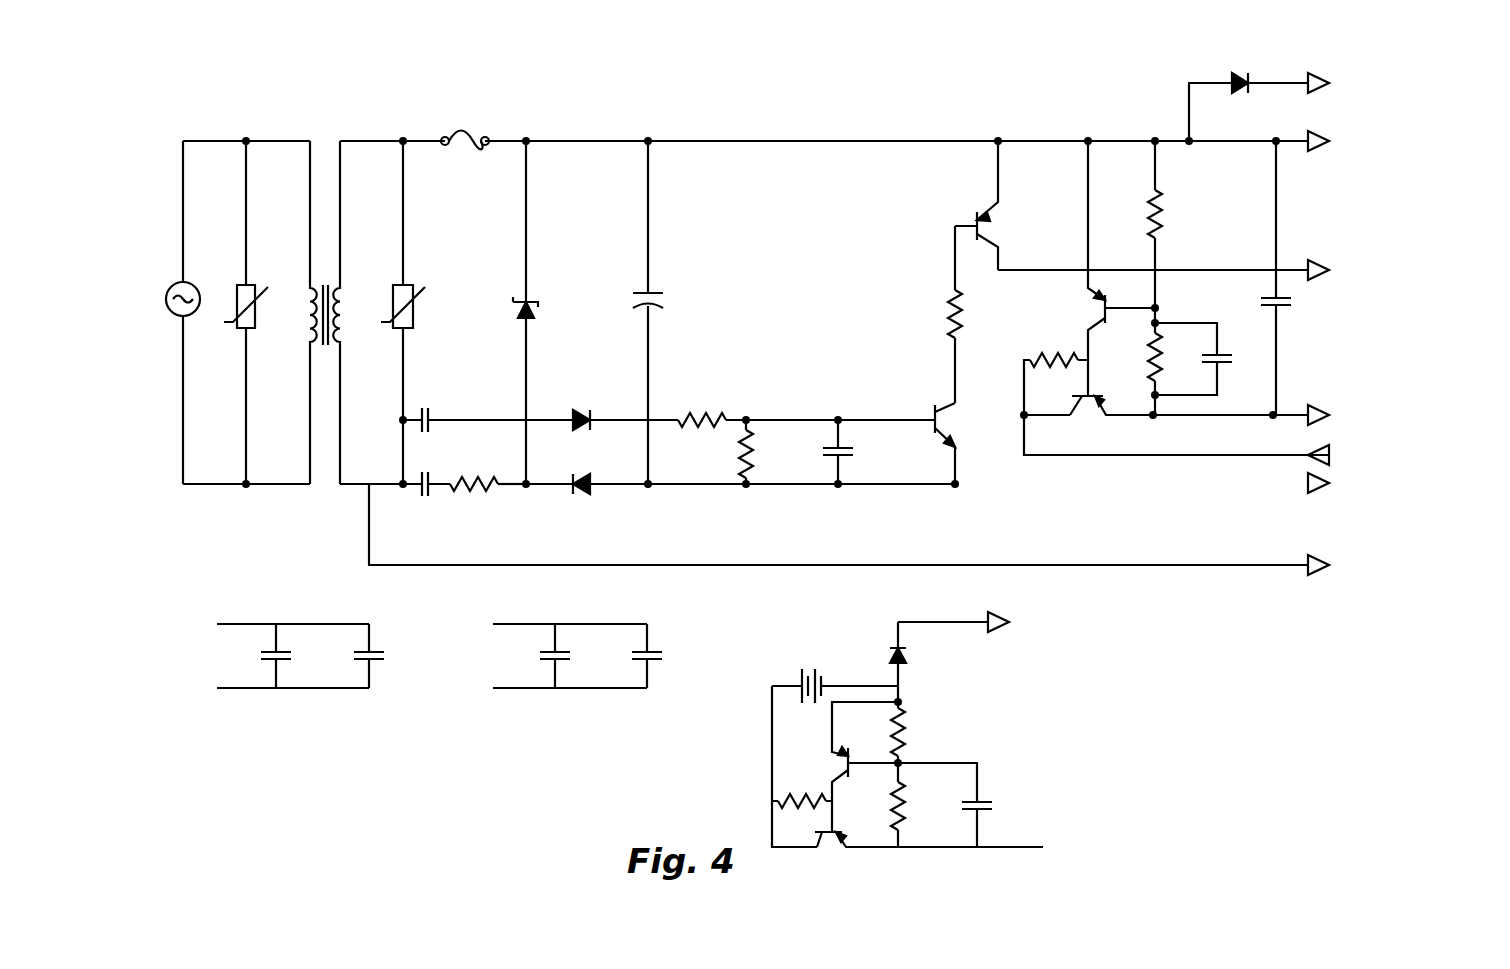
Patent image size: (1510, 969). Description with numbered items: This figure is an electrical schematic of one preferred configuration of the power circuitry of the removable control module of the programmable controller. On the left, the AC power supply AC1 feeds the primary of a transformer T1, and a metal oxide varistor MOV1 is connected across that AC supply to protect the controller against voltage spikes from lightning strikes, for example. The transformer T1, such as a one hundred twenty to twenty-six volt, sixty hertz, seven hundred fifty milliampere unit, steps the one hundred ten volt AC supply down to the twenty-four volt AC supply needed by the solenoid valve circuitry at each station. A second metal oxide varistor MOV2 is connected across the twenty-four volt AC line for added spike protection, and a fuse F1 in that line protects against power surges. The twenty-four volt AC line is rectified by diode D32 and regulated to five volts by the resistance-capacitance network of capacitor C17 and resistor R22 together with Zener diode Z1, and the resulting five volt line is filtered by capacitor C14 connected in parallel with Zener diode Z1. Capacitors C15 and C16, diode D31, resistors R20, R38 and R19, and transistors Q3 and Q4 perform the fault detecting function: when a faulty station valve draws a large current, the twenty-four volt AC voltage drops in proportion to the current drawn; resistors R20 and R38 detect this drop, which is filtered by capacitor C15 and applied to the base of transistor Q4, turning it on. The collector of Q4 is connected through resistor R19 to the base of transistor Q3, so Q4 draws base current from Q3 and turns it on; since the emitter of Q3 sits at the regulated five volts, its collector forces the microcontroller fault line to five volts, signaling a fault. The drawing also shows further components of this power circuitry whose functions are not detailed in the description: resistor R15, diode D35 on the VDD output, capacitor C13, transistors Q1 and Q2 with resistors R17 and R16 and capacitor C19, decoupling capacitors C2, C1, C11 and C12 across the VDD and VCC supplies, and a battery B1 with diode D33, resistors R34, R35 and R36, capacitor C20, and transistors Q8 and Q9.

The AC power source AC1 is at (162, 292).
The metal oxide varistor MOV1 is at (265, 312).
The transformer T1 is at (325, 312).
The metal oxide varistor MOV2 is at (426, 312).
The fuse F1 is at (465, 158).
The Zener diode Z1 is at (538, 312).
The capacitor C14 is at (673, 312).
The capacitor C16 is at (488, 407).
The capacitor C17 is at (425, 499).
The resistor R22 is at (488, 499).
The diode D31 is at (620, 434).
The diode D32 is at (587, 499).
The resistor R20 is at (743, 438).
The resistor R38 is at (788, 452).
The capacitor C15 is at (889, 452).
The transistor Q4 is at (962, 443).
The resistor R19 is at (978, 314).
The transistor Q3 is at (993, 205).
The resistor R15 is at (1178, 224).
The diode D35 is at (1248, 96).
The capacitor C13 is at (1293, 278).
The transistor Q1 is at (1105, 268).
The resistor R17 is at (1056, 374).
The transistor Q2 is at (1111, 420).
The resistor R16 is at (1132, 361).
The capacitor C19 is at (1209, 359).
The capacitor C2 is at (292, 656).
The capacitor C1 is at (385, 656).
The capacitor C11 is at (576, 656).
The capacitor C12 is at (669, 656).
The diode D33 is at (874, 654).
The battery B1 is at (835, 675).
The resistor R34 is at (922, 724).
The resistor R35 is at (922, 805).
The capacitor C20 is at (965, 805).
The transistor Q8 is at (865, 767).
The resistor R36 is at (802, 789).
The transistor Q9 is at (856, 853).